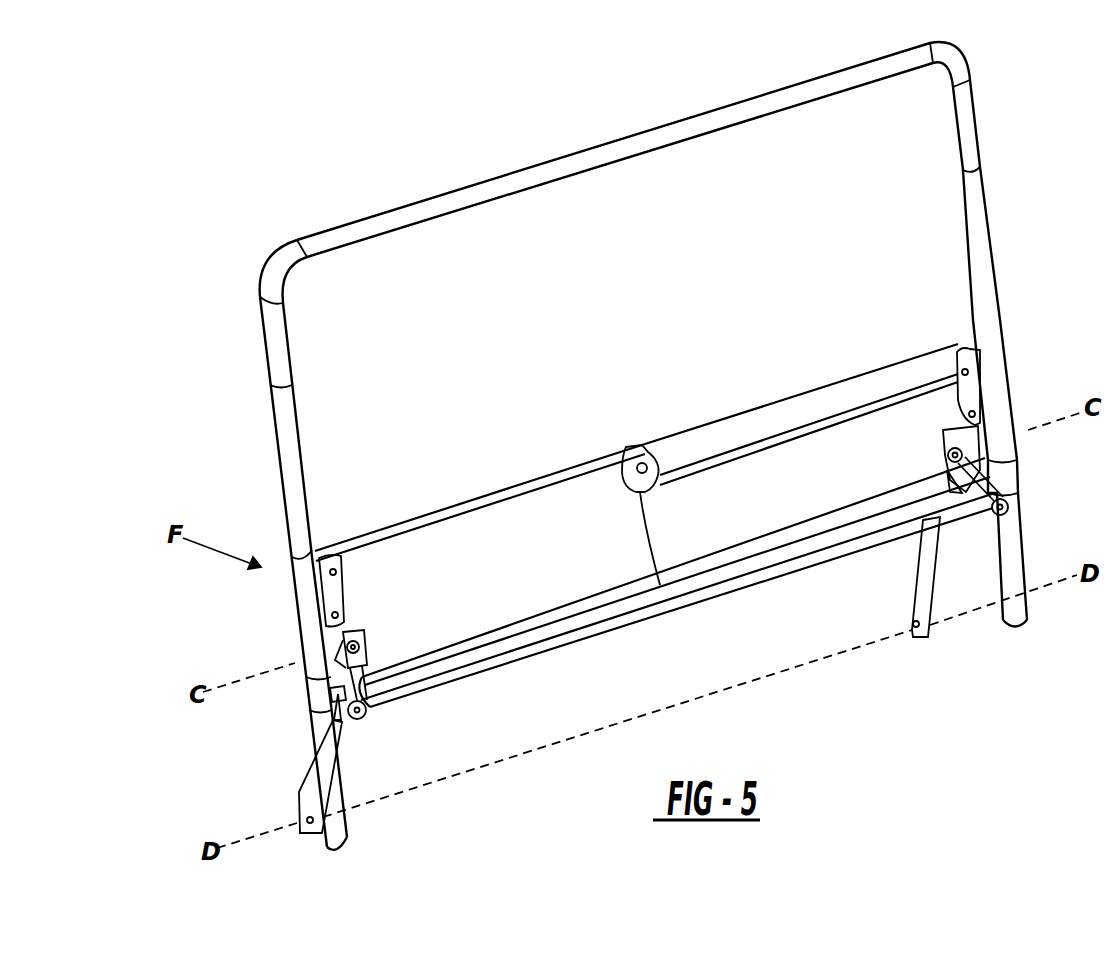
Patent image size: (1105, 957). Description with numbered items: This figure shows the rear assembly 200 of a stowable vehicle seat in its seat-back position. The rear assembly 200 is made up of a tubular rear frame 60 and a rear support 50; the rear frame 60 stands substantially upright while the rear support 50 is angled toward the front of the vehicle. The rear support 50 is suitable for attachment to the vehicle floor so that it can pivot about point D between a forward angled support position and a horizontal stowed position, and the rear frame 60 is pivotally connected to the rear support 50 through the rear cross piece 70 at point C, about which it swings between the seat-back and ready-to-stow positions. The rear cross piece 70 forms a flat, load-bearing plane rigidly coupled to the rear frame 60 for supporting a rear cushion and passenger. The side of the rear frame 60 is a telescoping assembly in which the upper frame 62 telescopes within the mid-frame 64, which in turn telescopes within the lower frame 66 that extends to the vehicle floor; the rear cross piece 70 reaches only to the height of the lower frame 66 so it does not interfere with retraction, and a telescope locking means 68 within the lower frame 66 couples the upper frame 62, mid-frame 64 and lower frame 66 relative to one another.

The rear assembly 200 is at (671, 446).
The rear frame 60 is at (638, 126).
The upper frame 62 is at (967, 127).
The mid-frame 64 is at (980, 250).
The lower frame 66 is at (1017, 558).
The telescope locking means 68 is at (328, 566).
The rear cross piece 70 is at (838, 395).
The rear support 50 is at (307, 797).